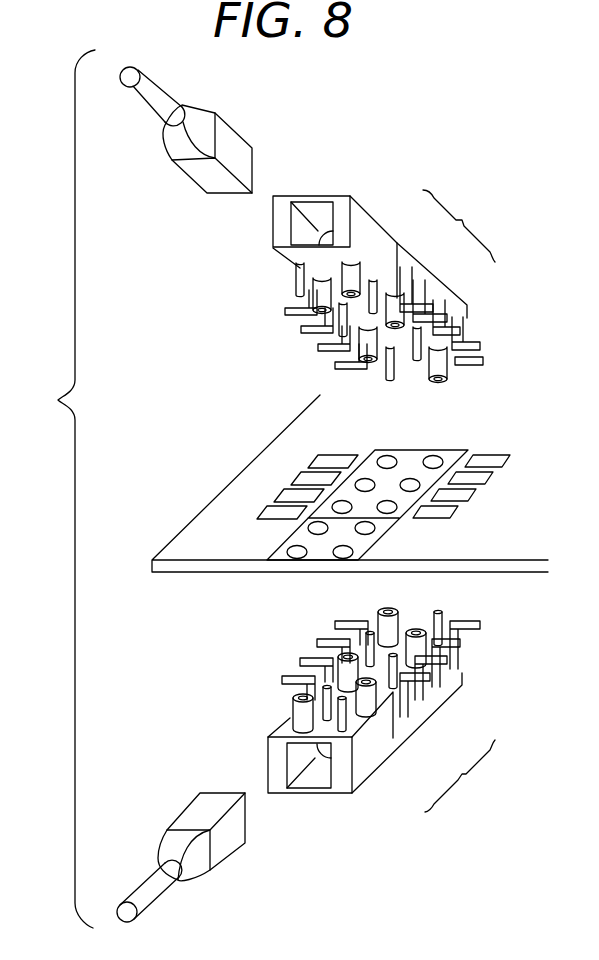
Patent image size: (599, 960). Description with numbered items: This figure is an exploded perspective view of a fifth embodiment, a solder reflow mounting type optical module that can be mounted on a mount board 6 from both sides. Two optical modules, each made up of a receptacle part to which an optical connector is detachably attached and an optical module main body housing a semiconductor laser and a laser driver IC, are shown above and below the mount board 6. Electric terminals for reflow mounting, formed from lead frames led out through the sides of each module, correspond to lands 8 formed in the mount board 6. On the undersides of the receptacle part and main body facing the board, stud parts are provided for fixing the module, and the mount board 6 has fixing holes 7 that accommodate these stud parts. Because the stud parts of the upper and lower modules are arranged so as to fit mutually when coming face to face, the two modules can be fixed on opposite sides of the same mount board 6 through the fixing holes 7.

The mount board 6 is at (197, 545).
The fixing holes 7 is at (290, 540).
The lands 8 is at (497, 458).